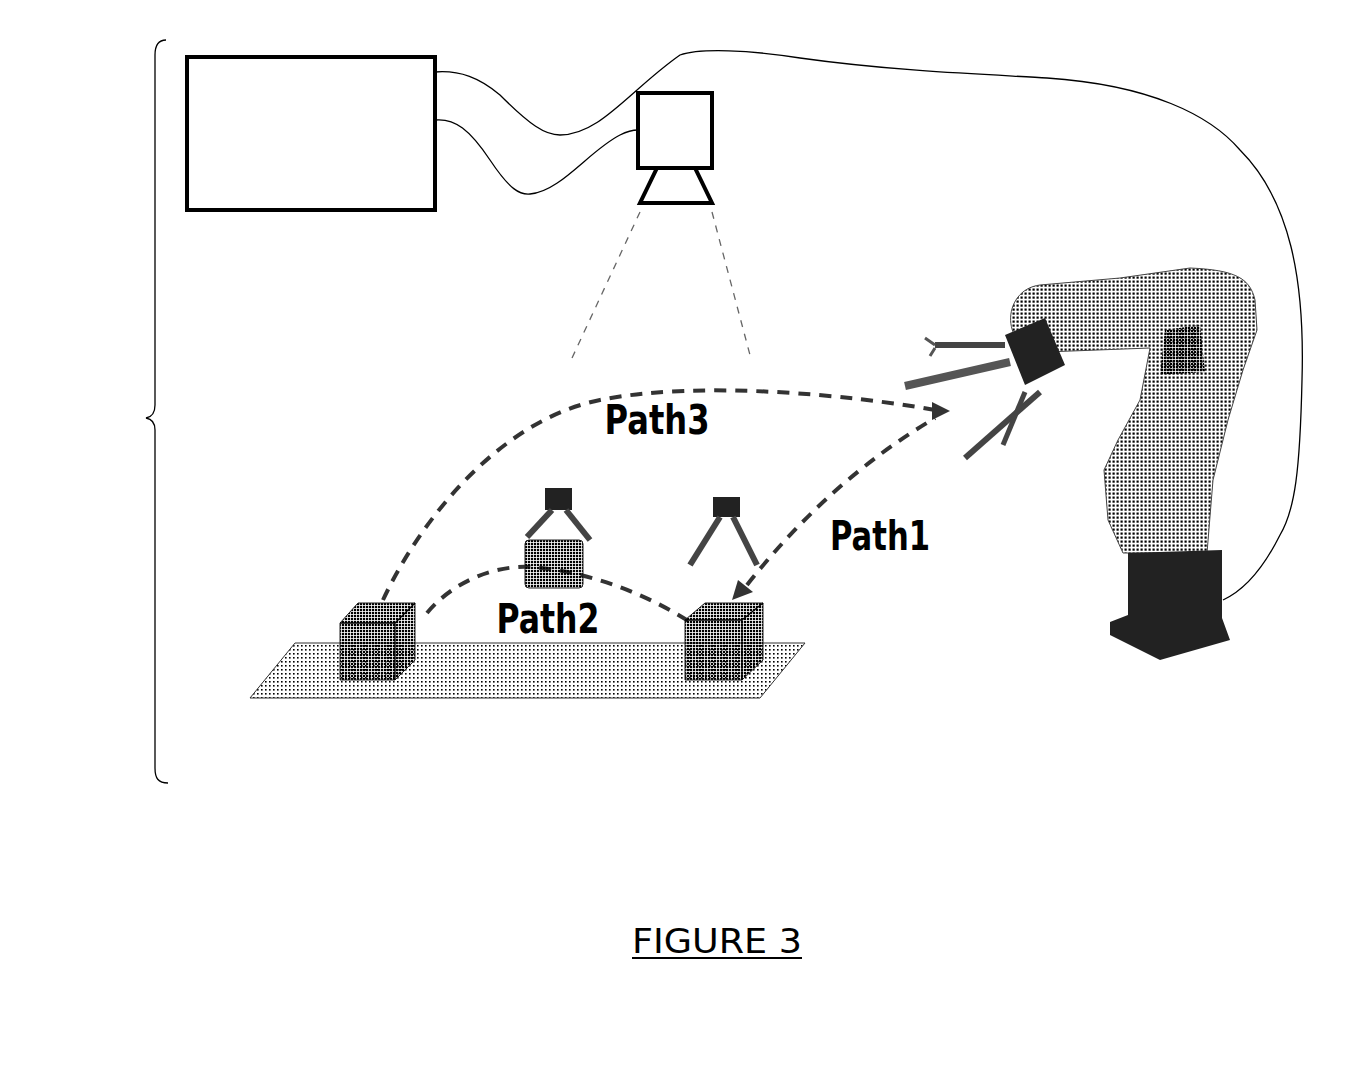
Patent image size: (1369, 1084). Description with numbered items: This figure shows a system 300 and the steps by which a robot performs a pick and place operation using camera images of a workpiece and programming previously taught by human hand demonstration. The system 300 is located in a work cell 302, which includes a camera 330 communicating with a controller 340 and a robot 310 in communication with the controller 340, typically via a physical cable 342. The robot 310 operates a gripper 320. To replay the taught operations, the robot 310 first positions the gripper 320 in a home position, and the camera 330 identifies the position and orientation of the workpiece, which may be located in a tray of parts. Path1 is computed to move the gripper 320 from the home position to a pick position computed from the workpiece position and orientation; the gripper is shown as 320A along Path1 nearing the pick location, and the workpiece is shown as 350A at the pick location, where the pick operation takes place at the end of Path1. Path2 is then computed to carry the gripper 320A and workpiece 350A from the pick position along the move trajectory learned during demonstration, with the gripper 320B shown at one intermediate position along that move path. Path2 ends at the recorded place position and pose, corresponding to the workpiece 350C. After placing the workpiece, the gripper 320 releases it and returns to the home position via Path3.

The system 300 is at (975, 750).
The work cell 302 is at (134, 411).
The robot 310 is at (1178, 248).
The gripper 320 is at (1000, 468).
The gripper along Path1 nearing pick location 320A is at (722, 495).
The gripper at intermediate position along move path 320B is at (560, 487).
The camera 330 is at (712, 140).
The controller 340 is at (355, 212).
The physical cable 342 is at (1050, 80).
The workpiece at pick location 350A is at (705, 668).
The workpiece at place location 350C is at (362, 662).